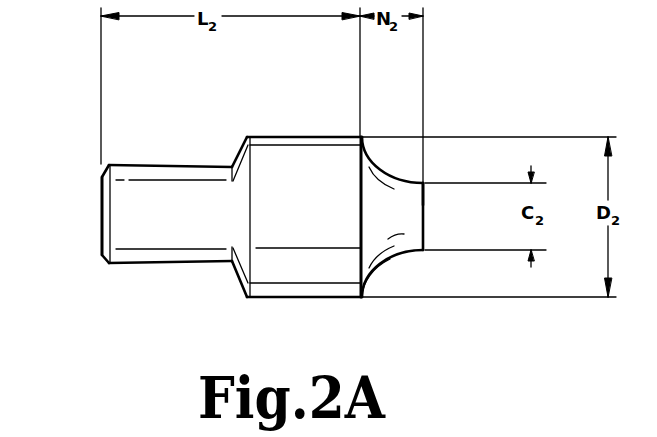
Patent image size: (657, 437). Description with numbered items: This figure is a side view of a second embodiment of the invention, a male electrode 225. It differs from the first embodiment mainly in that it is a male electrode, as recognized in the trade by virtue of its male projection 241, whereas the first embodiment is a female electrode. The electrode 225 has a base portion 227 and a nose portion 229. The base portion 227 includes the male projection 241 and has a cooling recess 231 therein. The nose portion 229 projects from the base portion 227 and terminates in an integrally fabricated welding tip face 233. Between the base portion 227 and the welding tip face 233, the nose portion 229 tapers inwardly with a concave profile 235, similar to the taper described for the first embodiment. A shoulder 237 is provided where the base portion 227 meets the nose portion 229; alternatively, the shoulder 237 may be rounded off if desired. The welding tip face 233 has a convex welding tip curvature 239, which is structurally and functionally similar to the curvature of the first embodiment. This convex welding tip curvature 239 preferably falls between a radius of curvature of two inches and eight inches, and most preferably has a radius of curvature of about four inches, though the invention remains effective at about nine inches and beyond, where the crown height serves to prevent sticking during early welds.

The electrode 225 is at (256, 112).
The base portion 227 is at (304, 146).
The nose portion 229 is at (405, 184).
The cooling recess 231 is at (84, 220).
The welding tip face 233 is at (425, 236).
The concave profile 235 is at (402, 276).
The shoulder 237 is at (378, 270).
The convex welding tip curvature 239 is at (440, 193).
The male projection 241 is at (198, 261).